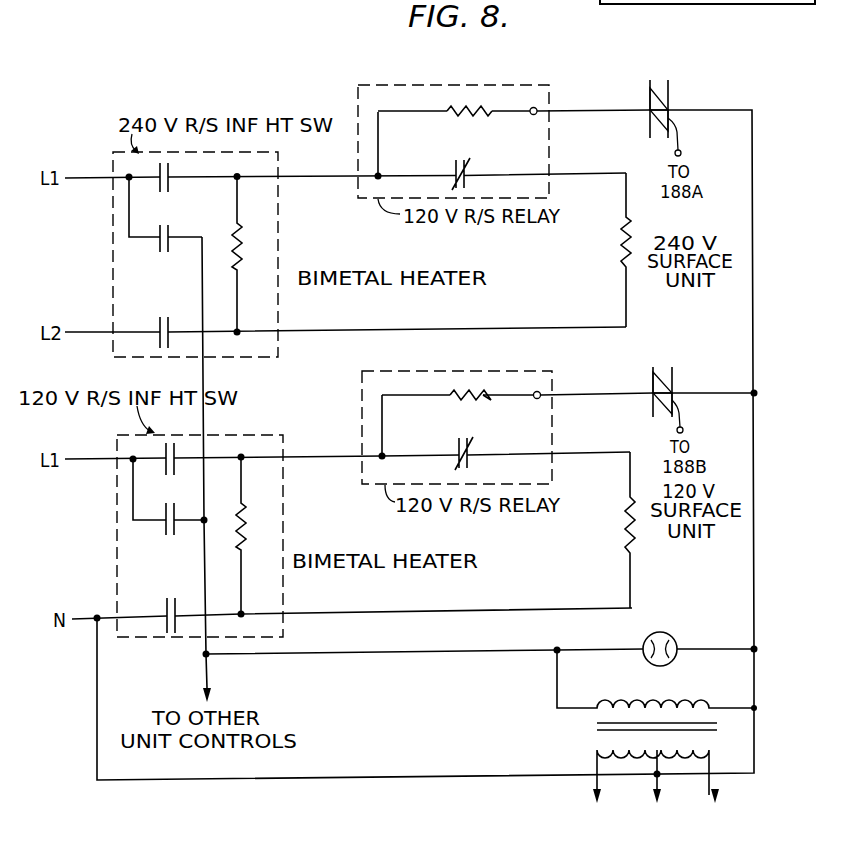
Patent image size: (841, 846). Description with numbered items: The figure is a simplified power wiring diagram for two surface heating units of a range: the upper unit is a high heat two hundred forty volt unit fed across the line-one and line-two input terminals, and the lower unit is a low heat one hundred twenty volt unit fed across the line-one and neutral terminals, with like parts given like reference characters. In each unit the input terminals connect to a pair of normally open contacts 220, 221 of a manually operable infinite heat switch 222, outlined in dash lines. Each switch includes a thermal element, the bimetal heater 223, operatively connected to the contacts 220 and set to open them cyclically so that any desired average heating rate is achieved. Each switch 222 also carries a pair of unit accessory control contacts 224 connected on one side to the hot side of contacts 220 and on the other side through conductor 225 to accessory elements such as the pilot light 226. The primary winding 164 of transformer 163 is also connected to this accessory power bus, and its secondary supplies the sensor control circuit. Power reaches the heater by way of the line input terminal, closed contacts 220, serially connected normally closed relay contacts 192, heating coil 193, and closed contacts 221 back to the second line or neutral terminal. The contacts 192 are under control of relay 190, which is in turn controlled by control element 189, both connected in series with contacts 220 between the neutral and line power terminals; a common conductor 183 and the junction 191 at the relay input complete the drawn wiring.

The transformer 163 is at (578, 750).
The primary winding 164 is at (670, 700).
The conductor 183 is at (753, 172).
The control element 189 is at (672, 120).
The relay 190 is at (466, 108).
The junction 191 is at (377, 178).
The relay contacts 192 is at (455, 164).
The heating coil 193 is at (620, 254).
The contacts 220 is at (170, 173).
The contacts 221 is at (160, 322).
The infinite heat switch 222 is at (279, 212).
The bimetal heater 223 is at (243, 250).
The unit accessory control contacts 224 is at (170, 232).
The conductor 225 is at (202, 287).
The pilot light 226 is at (662, 633).